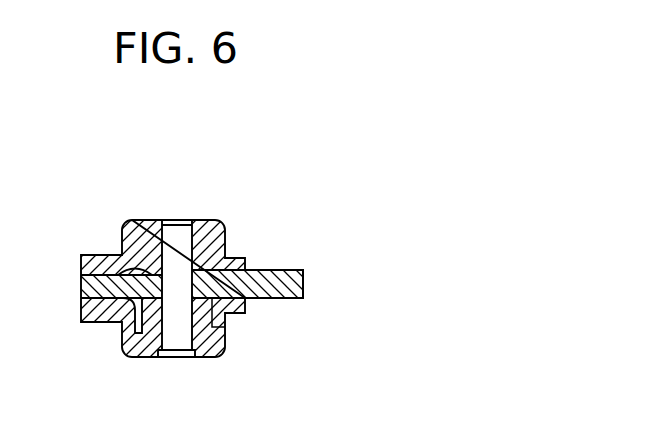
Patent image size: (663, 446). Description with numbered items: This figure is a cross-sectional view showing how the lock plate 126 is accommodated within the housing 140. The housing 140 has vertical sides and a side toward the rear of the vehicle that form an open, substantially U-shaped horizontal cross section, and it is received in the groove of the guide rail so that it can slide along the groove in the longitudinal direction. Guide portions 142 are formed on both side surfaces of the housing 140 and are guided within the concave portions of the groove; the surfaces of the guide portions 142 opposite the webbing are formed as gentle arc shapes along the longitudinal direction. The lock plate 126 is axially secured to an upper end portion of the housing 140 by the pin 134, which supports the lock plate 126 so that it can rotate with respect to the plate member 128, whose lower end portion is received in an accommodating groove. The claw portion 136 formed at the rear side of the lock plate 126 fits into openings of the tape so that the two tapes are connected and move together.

The lock plate 126 is at (270, 300).
The plate member 128 is at (148, 332).
The pin 134 is at (174, 235).
The claw portion 136 is at (303, 268).
The housing 140 is at (218, 217).
The guide portion 142 is at (148, 218).